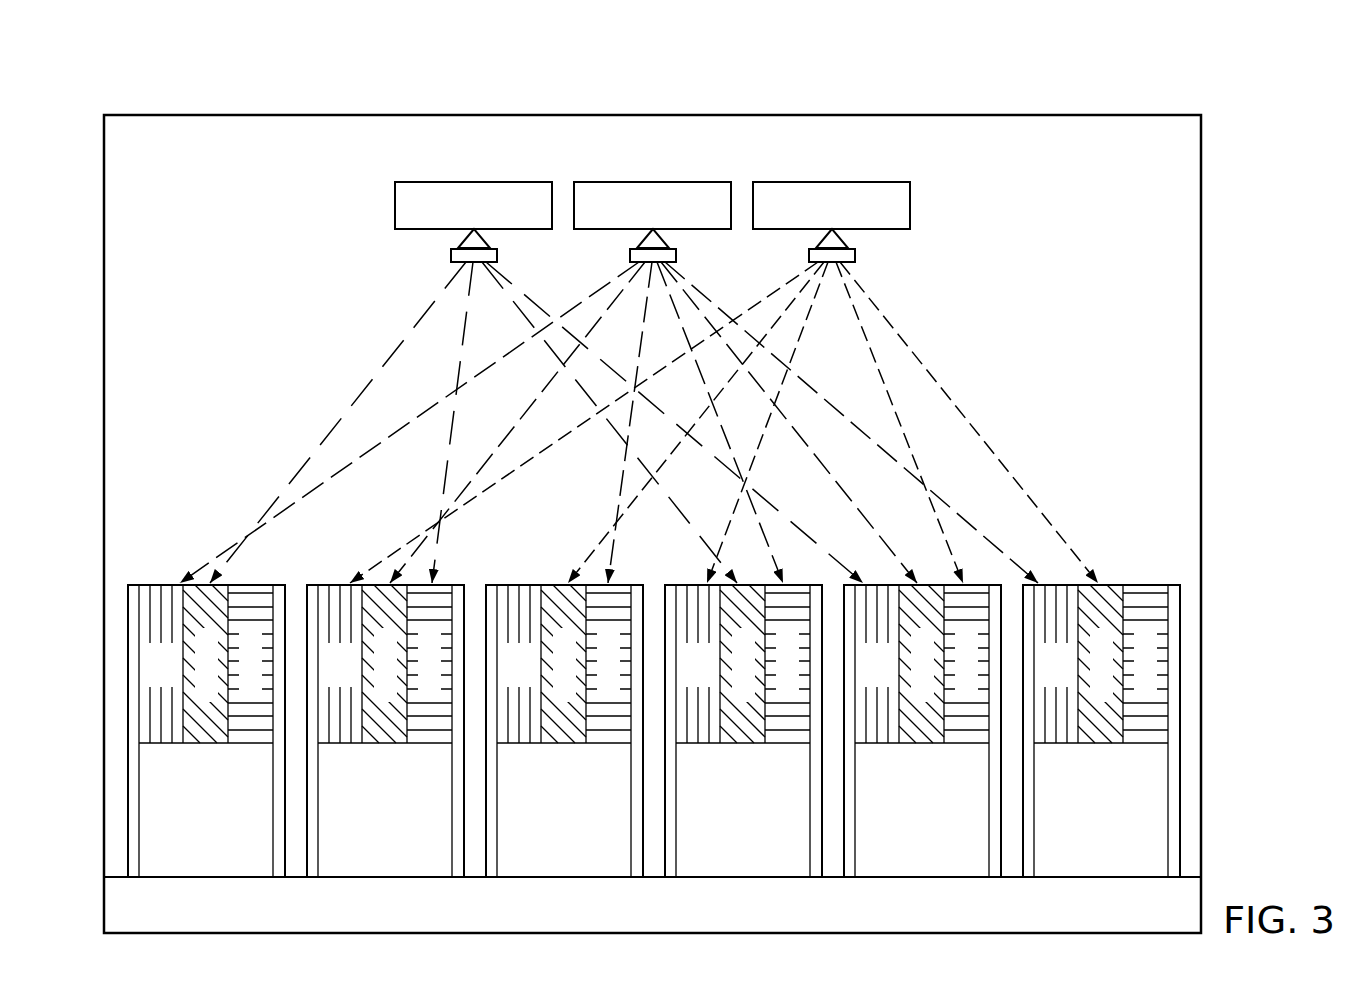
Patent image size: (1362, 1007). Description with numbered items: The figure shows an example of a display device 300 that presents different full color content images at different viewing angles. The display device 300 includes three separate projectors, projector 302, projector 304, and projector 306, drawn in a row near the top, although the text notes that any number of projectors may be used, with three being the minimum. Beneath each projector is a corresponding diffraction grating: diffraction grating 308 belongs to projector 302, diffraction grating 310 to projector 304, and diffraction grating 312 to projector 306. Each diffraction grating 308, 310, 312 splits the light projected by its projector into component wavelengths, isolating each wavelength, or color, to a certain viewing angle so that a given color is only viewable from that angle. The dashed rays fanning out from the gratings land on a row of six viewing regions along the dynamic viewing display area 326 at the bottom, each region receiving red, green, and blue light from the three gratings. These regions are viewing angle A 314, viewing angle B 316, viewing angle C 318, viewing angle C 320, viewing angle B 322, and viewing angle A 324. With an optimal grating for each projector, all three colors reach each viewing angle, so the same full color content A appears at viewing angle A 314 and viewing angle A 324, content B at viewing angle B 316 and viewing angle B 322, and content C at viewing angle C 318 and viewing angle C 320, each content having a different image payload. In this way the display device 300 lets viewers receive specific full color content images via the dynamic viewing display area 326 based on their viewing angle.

The display device 300 is at (962, 103).
The projector 302 is at (474, 182).
The projector 304 is at (654, 182).
The projector 306 is at (832, 182).
The diffraction grating 308 is at (452, 256).
The diffraction grating 310 is at (632, 256).
The diffraction grating 312 is at (855, 256).
The viewing angle A 314 is at (186, 856).
The viewing angle B 316 is at (365, 856).
The viewing angle C 318 is at (544, 856).
The viewing angle C 320 is at (723, 856).
The viewing angle B 322 is at (902, 856).
The viewing angle A 324 is at (1081, 856).
The dynamic viewing display area 326 is at (875, 918).